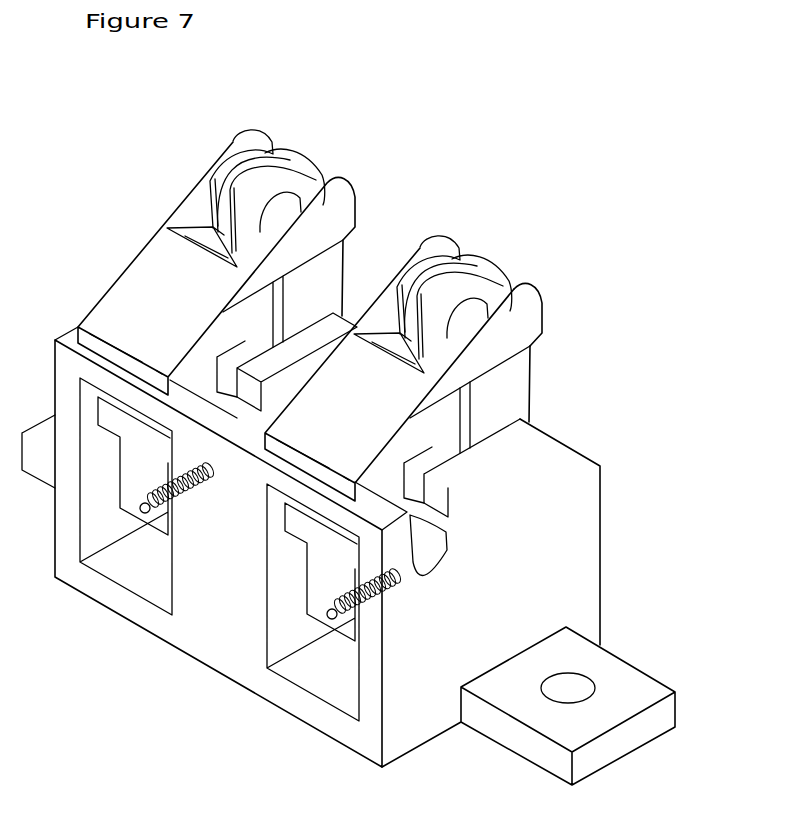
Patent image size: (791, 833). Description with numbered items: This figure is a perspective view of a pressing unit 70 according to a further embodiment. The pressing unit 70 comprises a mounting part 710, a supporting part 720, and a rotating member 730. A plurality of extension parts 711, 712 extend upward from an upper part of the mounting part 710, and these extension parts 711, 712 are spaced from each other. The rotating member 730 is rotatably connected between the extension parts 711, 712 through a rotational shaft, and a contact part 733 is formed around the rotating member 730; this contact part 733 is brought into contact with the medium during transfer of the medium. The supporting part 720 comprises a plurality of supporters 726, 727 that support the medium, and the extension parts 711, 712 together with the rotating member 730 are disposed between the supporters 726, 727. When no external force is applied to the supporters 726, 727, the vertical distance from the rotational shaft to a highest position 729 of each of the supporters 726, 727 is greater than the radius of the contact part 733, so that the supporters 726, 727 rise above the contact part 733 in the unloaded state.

The pressing unit 70 is at (105, 140).
The mounting part 710 is at (590, 565).
The extension part 711 is at (527, 380).
The extension part 712 is at (431, 263).
The supporting part 720 is at (115, 256).
The supporter 726 is at (403, 262).
The supporter 727 is at (537, 308).
The highest position 729 is at (515, 288).
The rotating member 730 is at (473, 300).
The contact part 733 is at (471, 262).